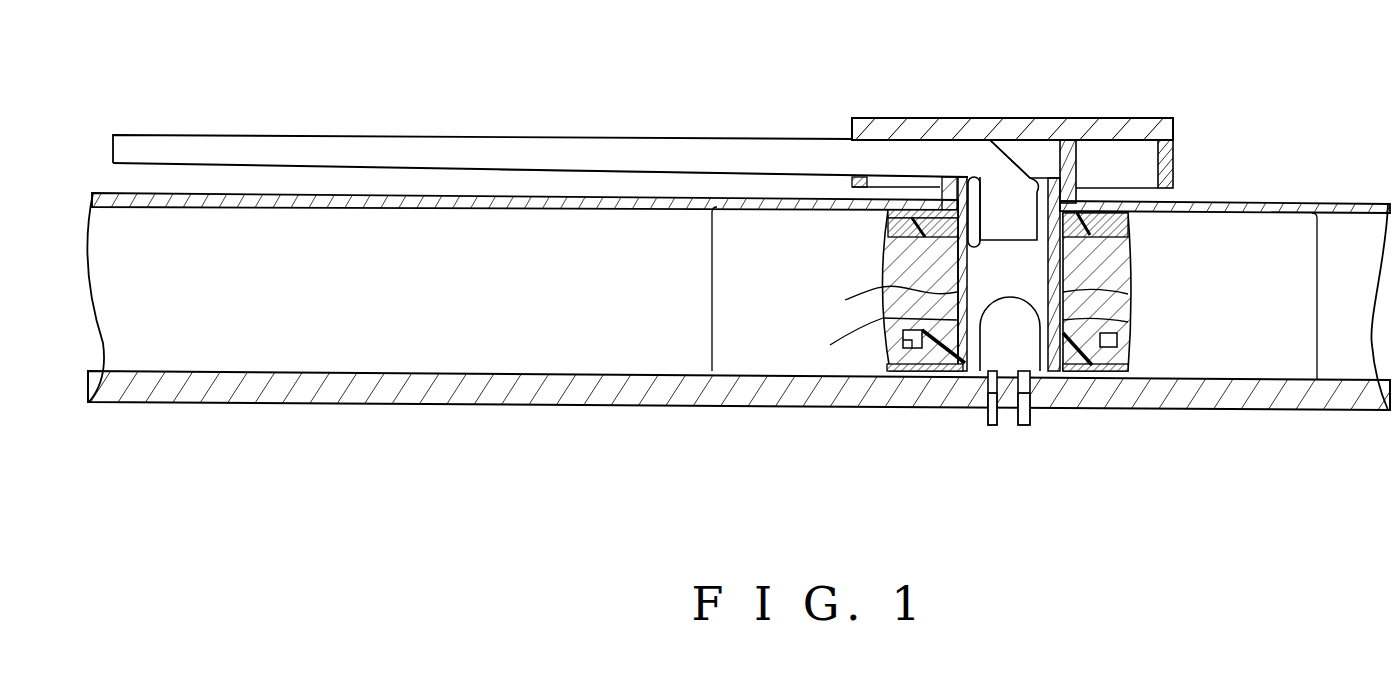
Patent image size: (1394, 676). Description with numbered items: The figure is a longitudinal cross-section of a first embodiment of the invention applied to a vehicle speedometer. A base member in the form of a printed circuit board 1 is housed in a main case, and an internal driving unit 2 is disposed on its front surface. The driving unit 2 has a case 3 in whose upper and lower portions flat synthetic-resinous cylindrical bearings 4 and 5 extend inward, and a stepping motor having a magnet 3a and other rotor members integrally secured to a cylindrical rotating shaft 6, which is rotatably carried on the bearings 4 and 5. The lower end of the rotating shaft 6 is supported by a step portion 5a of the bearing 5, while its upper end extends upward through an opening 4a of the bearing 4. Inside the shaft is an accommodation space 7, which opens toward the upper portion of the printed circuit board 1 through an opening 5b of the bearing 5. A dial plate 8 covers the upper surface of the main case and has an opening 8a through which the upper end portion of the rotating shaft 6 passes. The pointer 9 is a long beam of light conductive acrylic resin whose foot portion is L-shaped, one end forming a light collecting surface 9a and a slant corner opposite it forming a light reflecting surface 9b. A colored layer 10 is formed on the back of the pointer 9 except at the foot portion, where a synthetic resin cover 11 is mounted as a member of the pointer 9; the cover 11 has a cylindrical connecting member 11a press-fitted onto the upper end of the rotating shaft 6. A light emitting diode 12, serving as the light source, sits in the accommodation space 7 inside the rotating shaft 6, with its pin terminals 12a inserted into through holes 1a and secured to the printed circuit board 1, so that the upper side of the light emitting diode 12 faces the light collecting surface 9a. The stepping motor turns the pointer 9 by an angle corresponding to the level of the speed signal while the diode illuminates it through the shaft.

The printed circuit board 1 is at (478, 404).
The through holes 1a is at (1030, 394).
The internal driving unit 2 is at (1328, 254).
The case 3 is at (1117, 380).
The magnet 3a is at (900, 260).
The bearing 4 is at (1130, 232).
The opening 4a is at (1037, 188).
The bearing 5 is at (877, 378).
The step portion 5a is at (1130, 336).
The opening 5b is at (957, 378).
The rotating shaft 6 is at (882, 345).
The accommodation space 7 is at (892, 303).
The dial plate 8 is at (1268, 203).
The opening 8a is at (1170, 176).
The pointer 9 is at (775, 137).
The light collecting surface 9a is at (976, 177).
The light reflecting surface 9b is at (1011, 150).
The colored layer 10 is at (636, 177).
The cover 11 is at (1163, 118).
The cylindrical connecting member 11a is at (1078, 152).
The light emitting diode 12 is at (1130, 298).
The pin terminals 12a is at (993, 428).